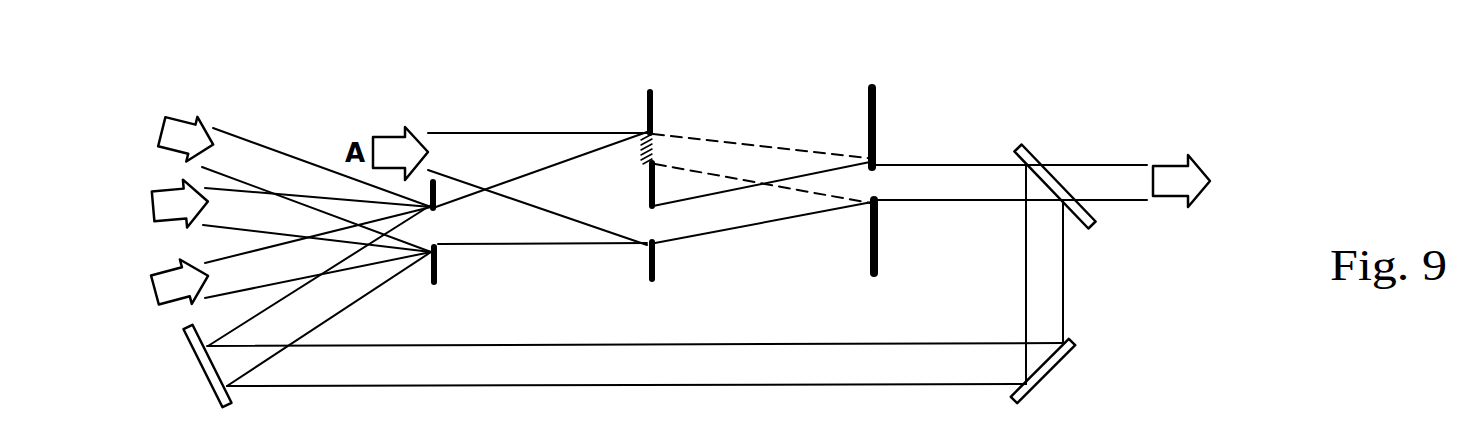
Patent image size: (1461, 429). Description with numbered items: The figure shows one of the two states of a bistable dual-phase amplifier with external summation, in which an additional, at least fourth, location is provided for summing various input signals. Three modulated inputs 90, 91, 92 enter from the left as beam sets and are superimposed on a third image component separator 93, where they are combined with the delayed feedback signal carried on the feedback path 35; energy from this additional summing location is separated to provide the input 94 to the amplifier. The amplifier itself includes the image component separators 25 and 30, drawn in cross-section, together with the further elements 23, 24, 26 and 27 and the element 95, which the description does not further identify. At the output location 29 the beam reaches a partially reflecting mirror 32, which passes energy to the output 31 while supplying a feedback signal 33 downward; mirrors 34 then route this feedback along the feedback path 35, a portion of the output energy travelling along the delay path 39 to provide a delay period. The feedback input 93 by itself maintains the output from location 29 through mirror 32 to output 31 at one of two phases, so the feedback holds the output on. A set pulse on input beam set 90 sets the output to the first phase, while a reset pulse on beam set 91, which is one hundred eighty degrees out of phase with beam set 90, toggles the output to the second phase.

The mirror 23 is at (655, 227).
The partially transmissive portion 24 is at (664, 146).
The image component separator 25 is at (646, 103).
The reflected beam 26 is at (762, 202).
The transmitted beam 27 is at (761, 168).
The output location 29 is at (870, 185).
The image component separator 30 is at (866, 110).
The output 31 is at (1201, 181).
The partially reflecting mirror 32 is at (1038, 152).
The feedback signal 33 is at (1044, 274).
The mirrors 34 is at (190, 377).
The feedback path 35 is at (698, 369).
The delay path 39 is at (372, 284).
The modulated input beam set 90 is at (276, 180).
The modulated input beam set 91 is at (272, 215).
The modulated input 92 is at (271, 260).
The third image component separator 93 is at (319, 295).
The amplifier input 94 is at (422, 270).
The mirror 95 is at (437, 228).